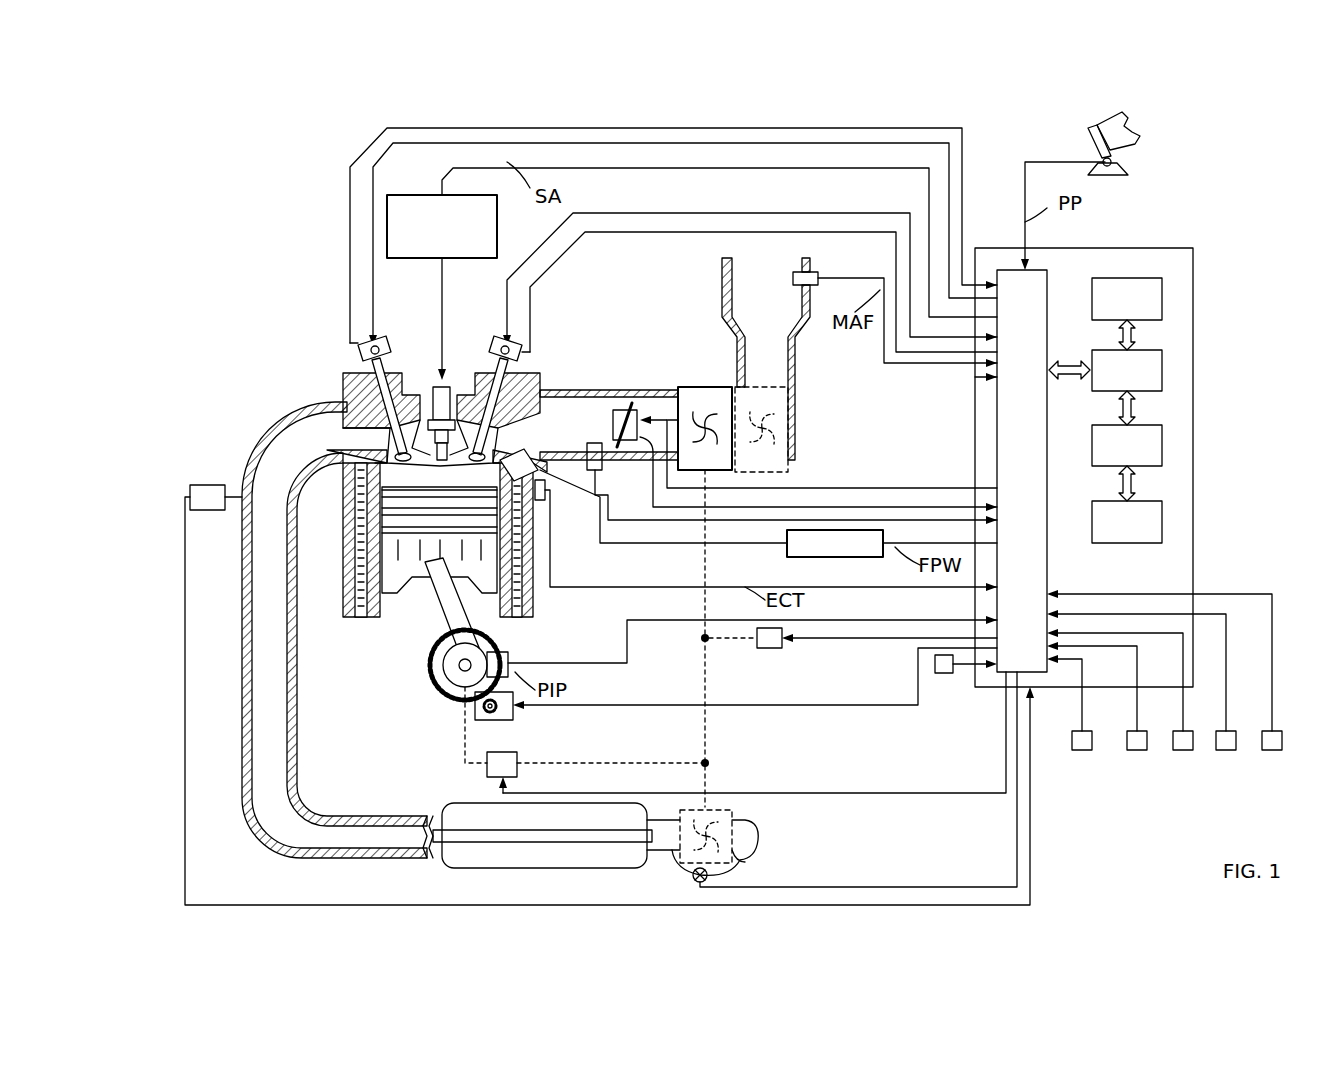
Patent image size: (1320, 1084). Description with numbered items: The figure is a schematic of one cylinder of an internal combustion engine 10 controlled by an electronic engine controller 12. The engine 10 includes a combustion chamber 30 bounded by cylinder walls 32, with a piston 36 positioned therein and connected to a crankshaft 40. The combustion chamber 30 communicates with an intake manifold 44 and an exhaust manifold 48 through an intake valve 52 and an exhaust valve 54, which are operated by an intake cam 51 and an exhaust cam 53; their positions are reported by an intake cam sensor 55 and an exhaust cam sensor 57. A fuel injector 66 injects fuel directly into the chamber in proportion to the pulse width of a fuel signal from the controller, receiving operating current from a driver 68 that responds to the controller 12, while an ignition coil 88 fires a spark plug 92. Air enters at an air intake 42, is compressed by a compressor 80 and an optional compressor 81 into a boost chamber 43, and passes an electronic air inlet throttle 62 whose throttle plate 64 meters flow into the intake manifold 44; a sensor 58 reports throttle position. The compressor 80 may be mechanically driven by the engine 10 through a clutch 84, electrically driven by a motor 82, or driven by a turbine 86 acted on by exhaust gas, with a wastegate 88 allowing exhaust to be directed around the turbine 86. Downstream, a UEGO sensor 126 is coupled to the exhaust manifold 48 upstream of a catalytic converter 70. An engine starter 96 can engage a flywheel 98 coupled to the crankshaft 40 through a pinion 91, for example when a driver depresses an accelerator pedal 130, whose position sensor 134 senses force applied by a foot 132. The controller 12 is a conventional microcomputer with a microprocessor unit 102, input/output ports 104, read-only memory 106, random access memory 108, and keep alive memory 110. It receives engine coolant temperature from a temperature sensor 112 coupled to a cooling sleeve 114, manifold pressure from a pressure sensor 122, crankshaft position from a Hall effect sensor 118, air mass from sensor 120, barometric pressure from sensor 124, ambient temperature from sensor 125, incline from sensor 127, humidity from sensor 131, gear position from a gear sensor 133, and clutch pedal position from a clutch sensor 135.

The internal combustion engine 10 is at (282, 320).
The electronic engine controller 12 is at (1185, 248).
The combustion chamber 30 is at (438, 465).
The cylinder walls 32 is at (378, 615).
The piston 36 is at (420, 565).
The crankshaft 40 is at (446, 696).
The air intake 42 is at (766, 359).
The boost chamber 43 is at (656, 410).
The intake manifold 44 is at (609, 425).
The exhaust manifold 48 is at (337, 630).
The intake cam 51 is at (503, 345).
The intake valve 52 is at (492, 448).
The exhaust cam 53 is at (378, 345).
The exhaust valve 54 is at (345, 410).
The intake cam sensor 55 is at (520, 353).
The exhaust cam sensor 57 is at (360, 353).
The air inlet throttle position sensor 58 is at (640, 442).
The electronic air inlet throttle 62 is at (604, 396).
The air inlet throttle plate 64 is at (618, 410).
The fuel injector 66 is at (540, 473).
The driver 68 is at (787, 548).
The catalytic converter 70 is at (445, 868).
The compressor 80 is at (682, 387).
The optional compressor 81 is at (738, 390).
The electric motor 82 is at (780, 648).
The clutch 84 is at (485, 775).
The turbine 86 is at (732, 813).
The ignition coil / wastegate 88 is at (405, 197).
The pinion 91 is at (494, 712).
The spark plug 92 is at (445, 385).
The engine starter 96 is at (736, 699).
The flywheel 98 is at (448, 695).
The microprocessor unit 102 is at (1162, 370).
The input/output ports 104 is at (1047, 280).
The read-only memory 106 is at (1162, 298).
The random access memory 108 is at (1162, 445).
The keep alive memory 110 is at (1162, 522).
The temperature sensor 112 is at (548, 500).
The cooling sleeve 114 is at (535, 595).
The Hall effect sensor 118 is at (508, 650).
The air mass sensor 120 is at (812, 270).
The pressure sensor 122 is at (602, 478).
The barometric pressure sensor 124 is at (943, 680).
The ambient temperature sensor 125 is at (1137, 750).
The Universal Exhaust Gas Oxygen (UEGO) sensor 126 is at (190, 493).
The incline sensor 127 is at (1082, 750).
The accelerator pedal 130 is at (1095, 138).
The humidity sensor 131 is at (1183, 750).
The foot 132 is at (1135, 128).
The gear sensor 133 is at (1226, 750).
The position sensor 134 is at (1117, 163).
The clutch sensor 135 is at (1272, 750).